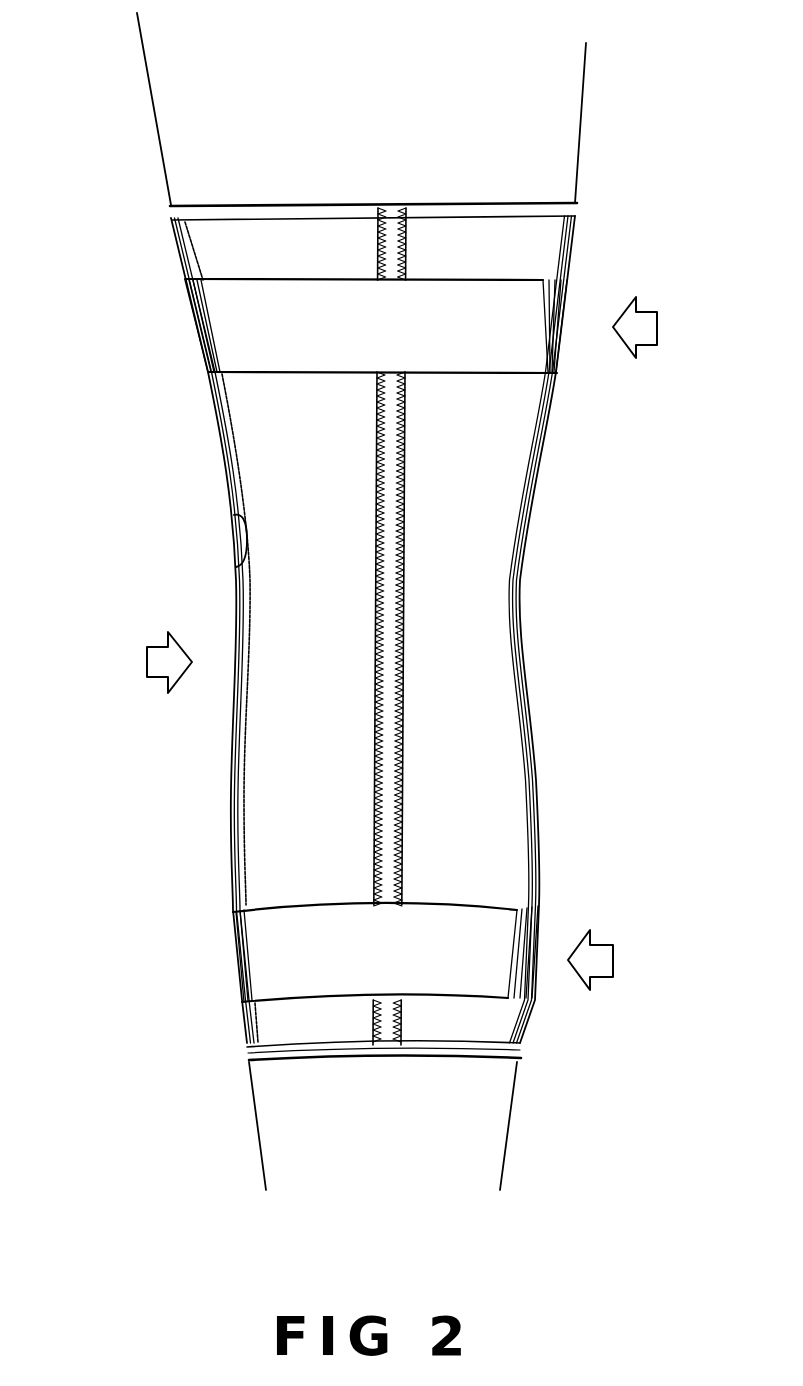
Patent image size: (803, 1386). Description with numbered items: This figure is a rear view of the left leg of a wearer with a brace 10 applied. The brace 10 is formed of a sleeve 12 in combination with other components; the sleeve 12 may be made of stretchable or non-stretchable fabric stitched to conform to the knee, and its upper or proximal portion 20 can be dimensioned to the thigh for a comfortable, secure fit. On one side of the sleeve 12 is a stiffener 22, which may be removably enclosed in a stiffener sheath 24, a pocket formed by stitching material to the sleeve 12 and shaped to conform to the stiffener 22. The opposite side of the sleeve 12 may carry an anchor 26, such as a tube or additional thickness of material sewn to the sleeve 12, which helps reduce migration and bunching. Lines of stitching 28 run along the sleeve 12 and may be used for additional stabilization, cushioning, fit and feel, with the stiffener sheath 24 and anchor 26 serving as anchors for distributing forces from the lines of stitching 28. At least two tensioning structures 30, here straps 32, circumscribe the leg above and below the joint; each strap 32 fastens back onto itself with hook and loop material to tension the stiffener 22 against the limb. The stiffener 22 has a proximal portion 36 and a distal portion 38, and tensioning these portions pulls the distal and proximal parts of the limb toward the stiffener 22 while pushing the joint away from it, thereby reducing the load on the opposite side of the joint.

The brace 10 is at (188, 158).
The sleeve 12 is at (485, 590).
The proximal portion 20 is at (345, 240).
The stiffener 22 is at (244, 534).
The stiffener sheath 24 is at (226, 455).
The anchor 26 is at (530, 692).
The lines of stitching 28 is at (389, 626).
The tensioning structures 30 is at (347, 338).
The straps 32 is at (549, 341).
The proximal portion 36 is at (184, 258).
The distal portion 38 is at (247, 1033).